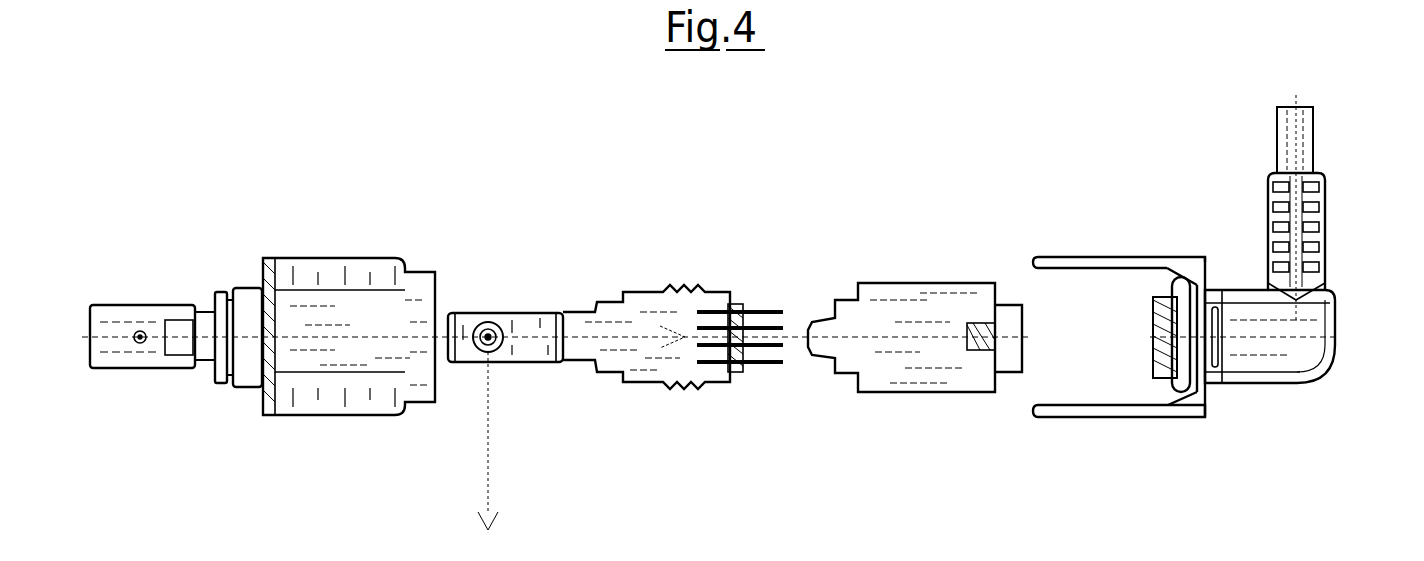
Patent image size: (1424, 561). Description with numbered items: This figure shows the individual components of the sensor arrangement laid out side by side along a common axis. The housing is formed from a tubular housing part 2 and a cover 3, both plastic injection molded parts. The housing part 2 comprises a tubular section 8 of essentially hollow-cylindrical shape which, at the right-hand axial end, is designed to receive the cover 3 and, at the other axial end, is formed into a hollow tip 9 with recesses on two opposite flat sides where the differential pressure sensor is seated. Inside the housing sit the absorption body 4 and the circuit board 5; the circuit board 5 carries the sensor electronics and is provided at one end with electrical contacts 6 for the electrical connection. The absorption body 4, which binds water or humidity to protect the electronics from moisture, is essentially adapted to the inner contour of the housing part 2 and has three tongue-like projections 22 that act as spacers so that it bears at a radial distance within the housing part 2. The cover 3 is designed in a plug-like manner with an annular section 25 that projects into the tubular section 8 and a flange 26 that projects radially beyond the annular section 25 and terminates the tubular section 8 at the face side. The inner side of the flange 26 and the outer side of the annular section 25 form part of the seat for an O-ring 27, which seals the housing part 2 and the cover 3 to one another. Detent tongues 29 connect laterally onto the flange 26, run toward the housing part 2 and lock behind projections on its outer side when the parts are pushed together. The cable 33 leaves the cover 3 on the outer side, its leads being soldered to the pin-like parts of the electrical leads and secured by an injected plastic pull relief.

The tubular housing part 2 is at (325, 278).
The cover 3 is at (1119, 322).
The absorption body 4 is at (915, 325).
The circuit board 5 is at (647, 283).
The electrical contacts 6 is at (755, 368).
The tubular section 8 is at (393, 326).
The tip 9 is at (150, 370).
The projections 22 is at (977, 355).
The annular section 25 is at (1172, 377).
The flange 26 is at (1190, 272).
The O-ring 27 is at (1202, 387).
The detent tongues 29 is at (1063, 263).
The cable 33 is at (1310, 152).